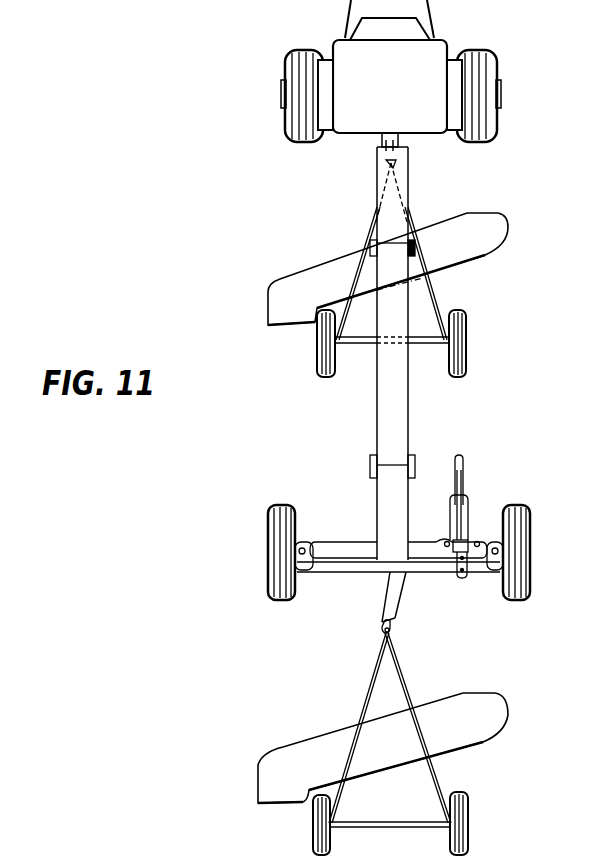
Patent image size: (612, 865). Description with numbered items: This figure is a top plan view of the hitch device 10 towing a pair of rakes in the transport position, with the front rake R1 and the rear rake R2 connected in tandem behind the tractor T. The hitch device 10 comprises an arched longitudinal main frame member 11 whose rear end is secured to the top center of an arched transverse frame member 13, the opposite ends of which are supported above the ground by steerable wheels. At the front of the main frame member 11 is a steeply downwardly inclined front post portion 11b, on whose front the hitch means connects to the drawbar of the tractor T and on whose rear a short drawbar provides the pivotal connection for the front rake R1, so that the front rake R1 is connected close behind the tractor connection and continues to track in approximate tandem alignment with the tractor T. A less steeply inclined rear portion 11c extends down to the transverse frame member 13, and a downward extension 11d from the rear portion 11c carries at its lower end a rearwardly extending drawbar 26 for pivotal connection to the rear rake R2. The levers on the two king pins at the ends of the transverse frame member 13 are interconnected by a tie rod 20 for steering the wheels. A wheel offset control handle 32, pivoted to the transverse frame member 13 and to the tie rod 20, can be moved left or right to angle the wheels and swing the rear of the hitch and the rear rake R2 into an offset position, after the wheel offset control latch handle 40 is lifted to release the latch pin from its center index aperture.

The tractor T is at (440, 48).
The hitch device 10 is at (450, 414).
The arched longitudinal main frame member 11 is at (390, 390).
The front post portion 11b is at (400, 182).
The rear portion 11c is at (395, 513).
The downward extension 11d is at (395, 600).
The arched transverse frame member 13 is at (340, 550).
The tie rod 20 is at (345, 572).
The drawbar 26 is at (384, 630).
The wheel offset control handle 32 is at (462, 458).
The wheel offset control latch handle 40 is at (463, 522).
The front rake R1 is at (452, 296).
The rear rake R2 is at (462, 771).